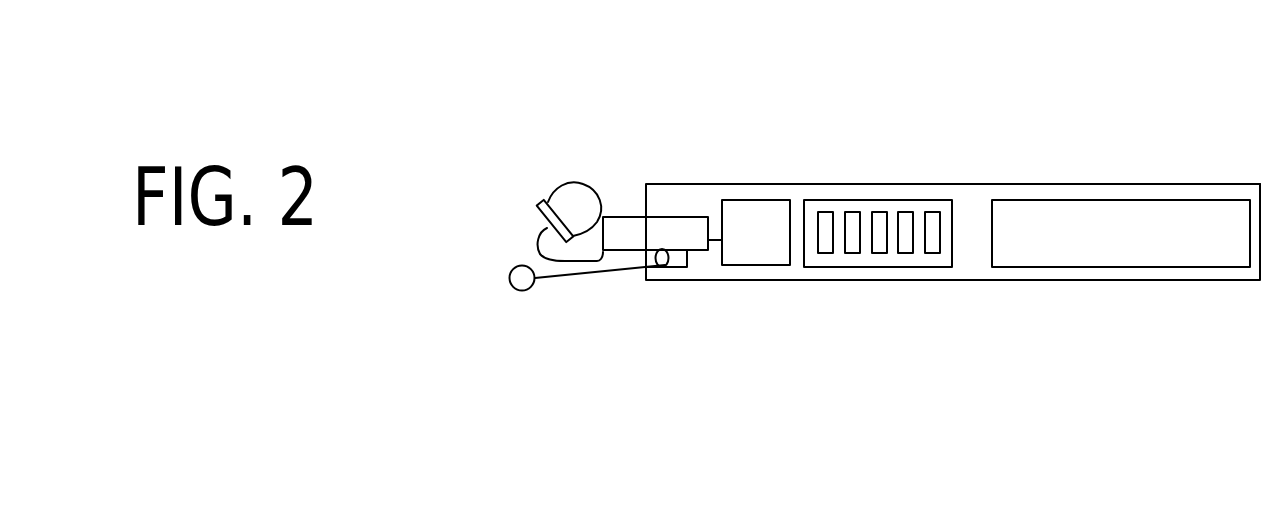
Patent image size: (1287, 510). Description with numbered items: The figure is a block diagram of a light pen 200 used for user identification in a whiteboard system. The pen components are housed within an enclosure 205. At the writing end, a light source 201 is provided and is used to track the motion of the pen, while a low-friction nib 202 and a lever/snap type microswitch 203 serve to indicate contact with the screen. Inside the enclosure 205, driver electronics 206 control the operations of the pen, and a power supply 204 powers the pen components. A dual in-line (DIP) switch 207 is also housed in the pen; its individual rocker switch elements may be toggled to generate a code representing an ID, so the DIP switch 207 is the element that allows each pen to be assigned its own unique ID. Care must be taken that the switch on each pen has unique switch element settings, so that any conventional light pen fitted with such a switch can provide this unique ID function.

The light pen 200 is at (583, 90).
The light source 201 is at (580, 215).
The low-friction nib 202 is at (511, 266).
The lever/snap type microswitch 203 is at (666, 240).
The power supply 204 is at (1200, 230).
The enclosure 205 is at (1130, 190).
The driver electronics 206 is at (752, 234).
The dual in-line (DIP) switch 207 is at (861, 210).